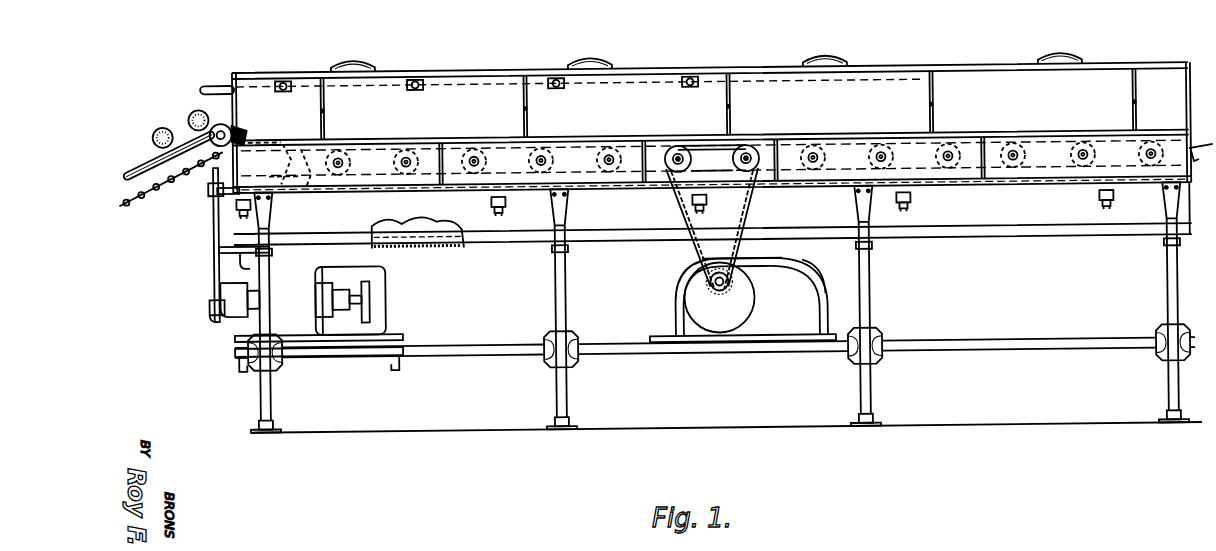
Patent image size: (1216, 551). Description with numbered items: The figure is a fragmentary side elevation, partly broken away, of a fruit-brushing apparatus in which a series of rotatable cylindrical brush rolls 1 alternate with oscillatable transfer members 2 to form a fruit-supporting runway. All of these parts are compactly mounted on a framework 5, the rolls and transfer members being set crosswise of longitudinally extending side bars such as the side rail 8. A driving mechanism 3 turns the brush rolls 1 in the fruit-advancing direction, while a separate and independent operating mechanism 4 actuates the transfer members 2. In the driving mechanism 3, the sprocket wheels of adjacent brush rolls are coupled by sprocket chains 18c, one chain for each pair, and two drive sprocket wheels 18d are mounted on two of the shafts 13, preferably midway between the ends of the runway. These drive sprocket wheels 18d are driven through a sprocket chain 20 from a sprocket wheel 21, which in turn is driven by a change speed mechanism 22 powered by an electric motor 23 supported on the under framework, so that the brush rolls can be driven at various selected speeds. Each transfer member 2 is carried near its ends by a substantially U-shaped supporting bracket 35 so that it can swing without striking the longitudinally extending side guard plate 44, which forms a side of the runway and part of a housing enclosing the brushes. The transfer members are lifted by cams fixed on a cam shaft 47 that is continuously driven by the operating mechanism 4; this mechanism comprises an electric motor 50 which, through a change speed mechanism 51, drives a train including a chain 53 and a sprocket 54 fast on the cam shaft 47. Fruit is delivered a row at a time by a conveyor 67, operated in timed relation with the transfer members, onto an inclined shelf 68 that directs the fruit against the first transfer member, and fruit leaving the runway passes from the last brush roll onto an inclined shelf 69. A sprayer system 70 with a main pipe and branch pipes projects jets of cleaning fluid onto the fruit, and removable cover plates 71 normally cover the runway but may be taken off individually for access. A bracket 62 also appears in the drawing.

The brush rolls 1 is at (321, 172).
The transfer members 2 is at (302, 140).
The driving mechanism 3 is at (688, 258).
The operating mechanism 4 is at (208, 240).
The framework 5 is at (547, 376).
The side rail 8 is at (1060, 195).
The shafts 13 is at (674, 156).
The sprocket chains 18c is at (626, 150).
The drive sprocket wheels 18d is at (707, 152).
The sprocket chain 20 is at (737, 266).
The sprocket wheel 21 is at (717, 296).
The change speed mechanism 22 is at (673, 304).
The electric motor 23 is at (822, 306).
The supporting bracket 35 is at (280, 165).
The side guard plate 44 is at (740, 88).
The cam shaft 47 is at (212, 200).
The electric motor 50 is at (381, 277).
The change speed mechanism 51 is at (296, 271).
The chain 53 is at (212, 252).
The sprocket 54 is at (212, 187).
The lower bracket 62 is at (220, 323).
The conveyor 67 is at (127, 165).
The inclined shelf 68 is at (244, 141).
The inclined shelf 69 is at (1202, 161).
The sprayer system 70 is at (175, 91).
The cover plates 71 is at (440, 75).